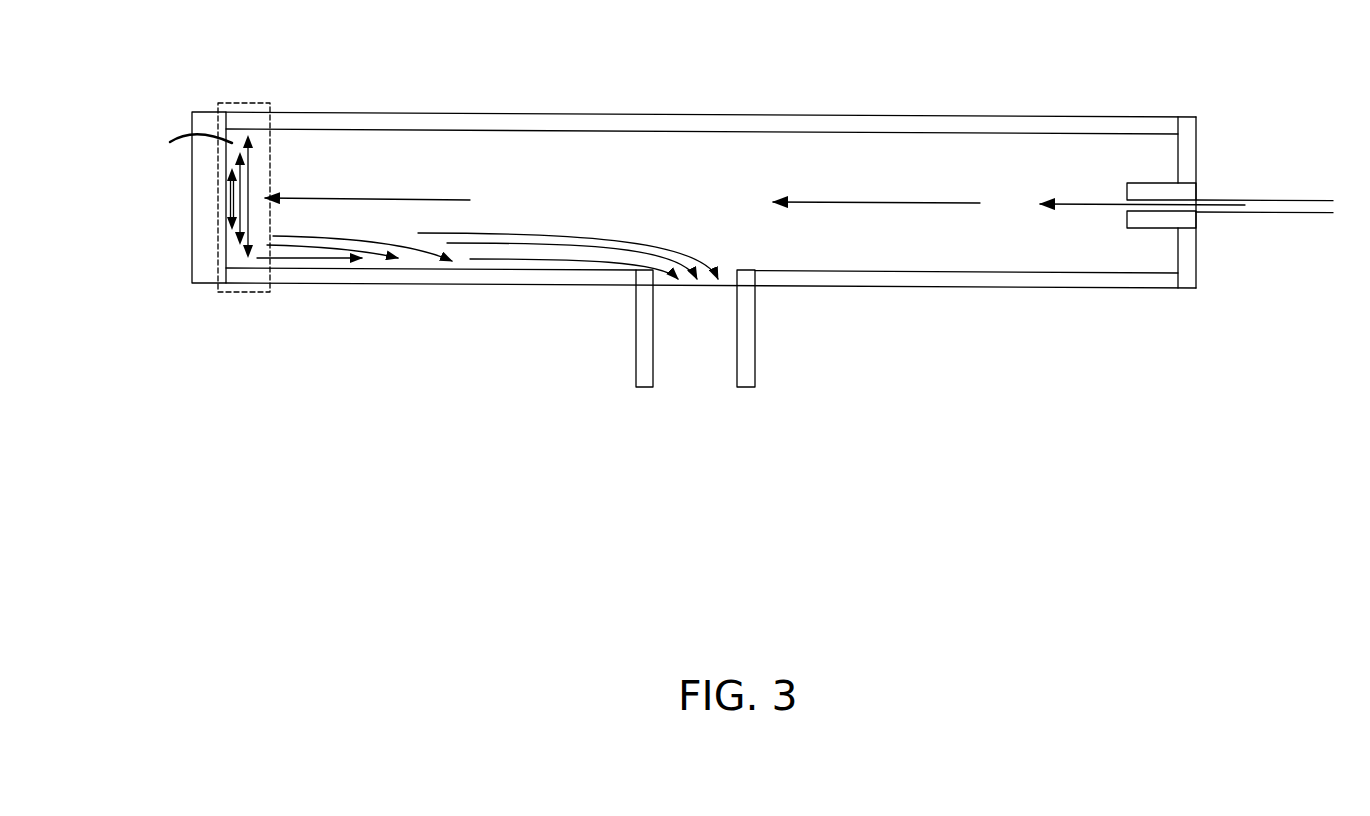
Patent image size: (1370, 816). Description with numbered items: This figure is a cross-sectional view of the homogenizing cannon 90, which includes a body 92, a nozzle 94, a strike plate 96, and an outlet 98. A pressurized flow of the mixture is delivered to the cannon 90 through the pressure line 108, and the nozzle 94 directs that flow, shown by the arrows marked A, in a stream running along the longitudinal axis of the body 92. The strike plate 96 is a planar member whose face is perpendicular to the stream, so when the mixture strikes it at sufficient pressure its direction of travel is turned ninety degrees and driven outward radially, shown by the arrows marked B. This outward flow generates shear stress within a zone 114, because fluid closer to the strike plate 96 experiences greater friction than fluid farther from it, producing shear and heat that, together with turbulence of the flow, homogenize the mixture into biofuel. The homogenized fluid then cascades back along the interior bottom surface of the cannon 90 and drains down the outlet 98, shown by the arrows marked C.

The cannon 90 is at (703, 62).
The body 92 is at (530, 113).
The nozzle 94 is at (1160, 183).
The strike plate 96 is at (192, 197).
The outlet 98 is at (755, 327).
The pressure line 108 is at (1237, 198).
The zone 114 is at (241, 103).